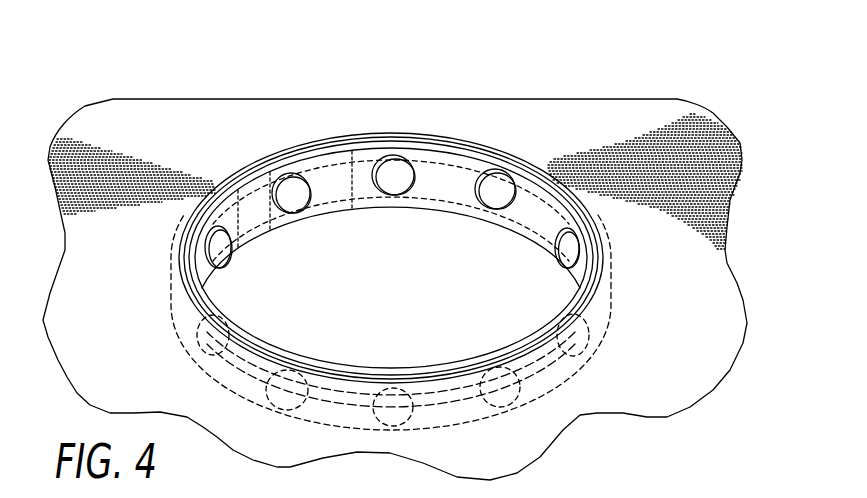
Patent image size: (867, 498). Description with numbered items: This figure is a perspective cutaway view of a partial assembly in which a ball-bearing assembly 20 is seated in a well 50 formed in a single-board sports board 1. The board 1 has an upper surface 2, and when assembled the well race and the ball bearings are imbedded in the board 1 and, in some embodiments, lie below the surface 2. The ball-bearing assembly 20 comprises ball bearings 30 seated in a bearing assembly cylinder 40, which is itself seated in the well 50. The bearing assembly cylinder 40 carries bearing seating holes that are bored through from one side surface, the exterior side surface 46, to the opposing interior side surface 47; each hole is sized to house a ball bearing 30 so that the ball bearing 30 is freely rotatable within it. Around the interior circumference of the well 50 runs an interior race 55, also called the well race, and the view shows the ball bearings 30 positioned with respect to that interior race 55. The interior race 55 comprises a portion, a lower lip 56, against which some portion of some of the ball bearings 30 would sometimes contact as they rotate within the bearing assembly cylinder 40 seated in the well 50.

The single-board sports board 1 is at (192, 128).
The upper surface 2 is at (128, 389).
The ball-bearing assembly 20 is at (393, 258).
The ball bearings 30 is at (578, 338).
The bearing assembly cylinder 40 is at (543, 385).
The exterior side surface 46 is at (450, 417).
The interior side surface 47 is at (440, 164).
The well 50 is at (332, 134).
The interior race 55 is at (343, 177).
The lower lip 56 is at (542, 228).